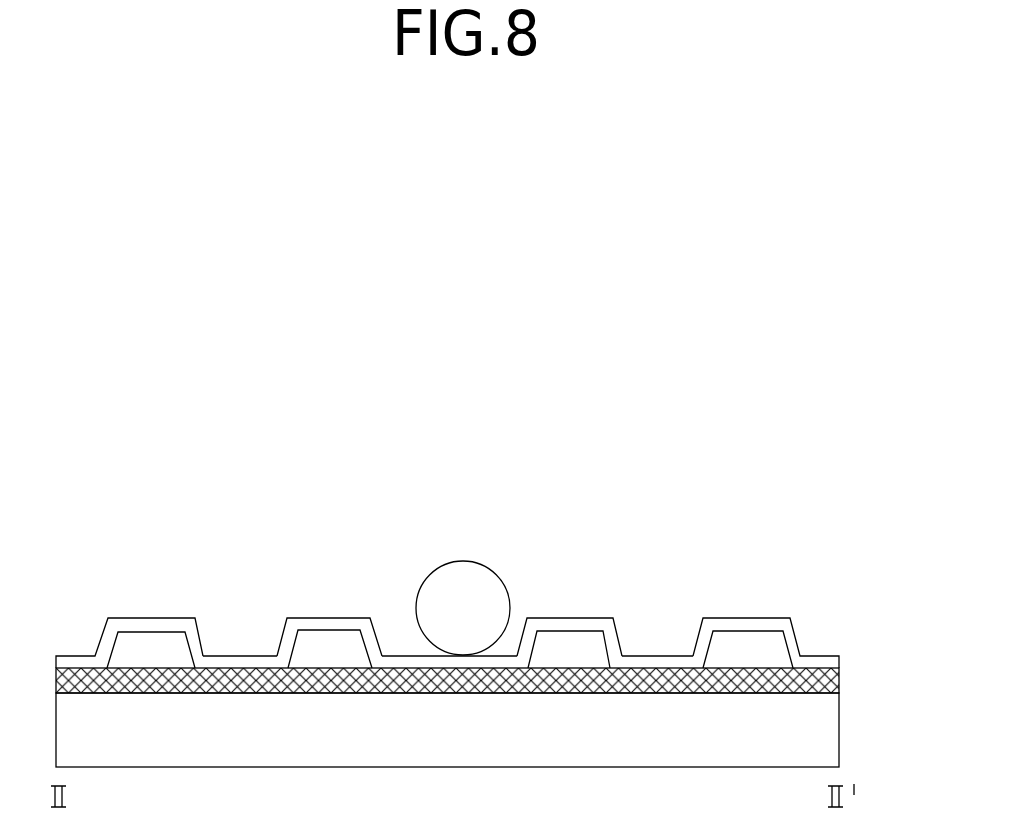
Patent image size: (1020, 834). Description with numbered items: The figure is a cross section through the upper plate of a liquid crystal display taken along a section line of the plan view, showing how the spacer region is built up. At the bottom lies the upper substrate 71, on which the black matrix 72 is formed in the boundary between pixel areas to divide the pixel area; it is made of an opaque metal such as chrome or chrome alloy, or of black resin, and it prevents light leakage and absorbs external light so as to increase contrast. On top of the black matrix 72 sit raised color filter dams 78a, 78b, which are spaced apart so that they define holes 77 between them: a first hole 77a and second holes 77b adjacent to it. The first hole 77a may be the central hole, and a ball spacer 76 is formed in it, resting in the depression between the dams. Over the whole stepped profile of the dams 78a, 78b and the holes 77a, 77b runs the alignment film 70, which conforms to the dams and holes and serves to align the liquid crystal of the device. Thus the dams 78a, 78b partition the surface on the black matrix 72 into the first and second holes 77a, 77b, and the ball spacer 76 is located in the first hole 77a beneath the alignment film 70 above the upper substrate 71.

The alignment film 70 is at (821, 658).
The upper substrate 71 is at (835, 733).
The black matrix 72 is at (840, 676).
The ball spacer 76 is at (515, 608).
The holes 77 is at (200, 557).
The first hole 77a is at (409, 648).
The second hole 77b is at (236, 650).
The first color filter dam 78a is at (335, 657).
The second color filter dam 78b is at (152, 658).